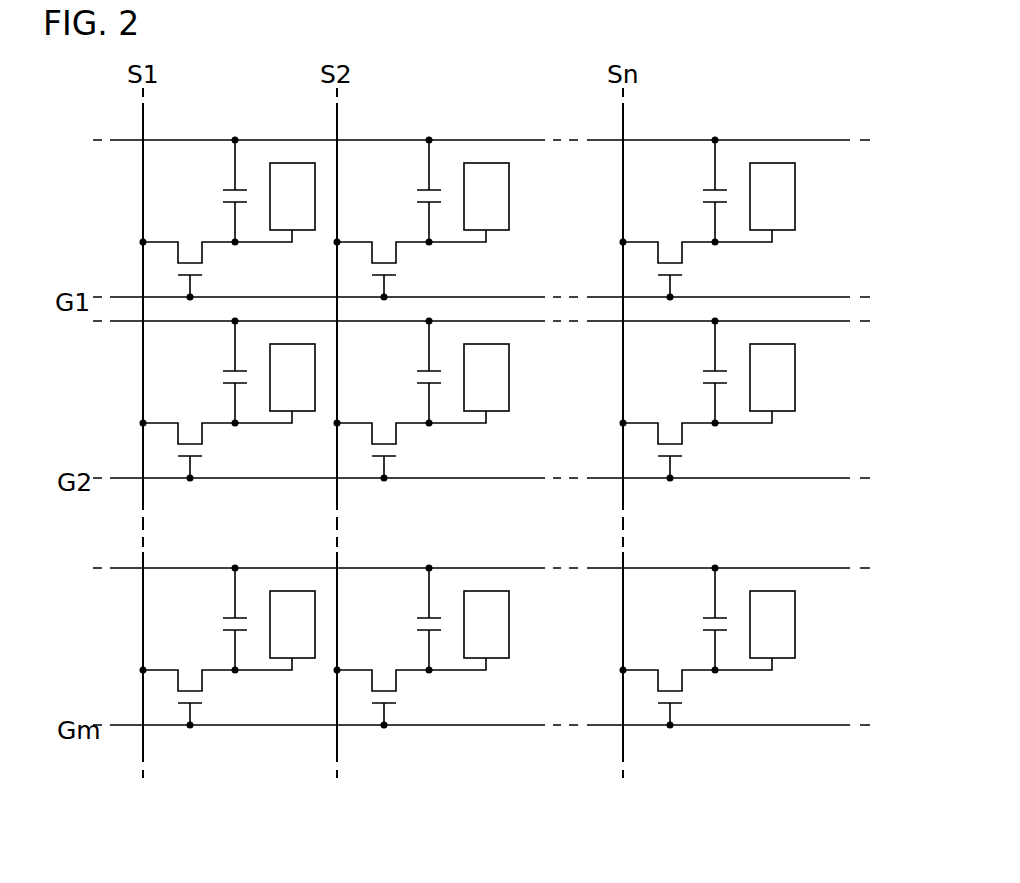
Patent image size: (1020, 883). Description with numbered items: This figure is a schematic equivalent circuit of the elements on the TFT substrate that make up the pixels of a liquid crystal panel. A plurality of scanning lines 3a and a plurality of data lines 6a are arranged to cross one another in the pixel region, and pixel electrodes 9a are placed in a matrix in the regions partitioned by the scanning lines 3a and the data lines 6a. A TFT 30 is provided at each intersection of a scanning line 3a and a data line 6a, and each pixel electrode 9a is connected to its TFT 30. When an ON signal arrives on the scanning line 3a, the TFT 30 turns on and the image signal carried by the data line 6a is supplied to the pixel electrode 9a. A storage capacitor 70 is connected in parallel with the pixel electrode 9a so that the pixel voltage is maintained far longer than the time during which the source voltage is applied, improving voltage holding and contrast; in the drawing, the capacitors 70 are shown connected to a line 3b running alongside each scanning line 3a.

The data line 6a is at (650, 116).
The scanning line 3a is at (835, 725).
The capacitor line 3b is at (832, 586).
The storage capacitor 70 is at (413, 625).
The TFT 30 is at (408, 697).
The pixel electrode 9a is at (506, 679).